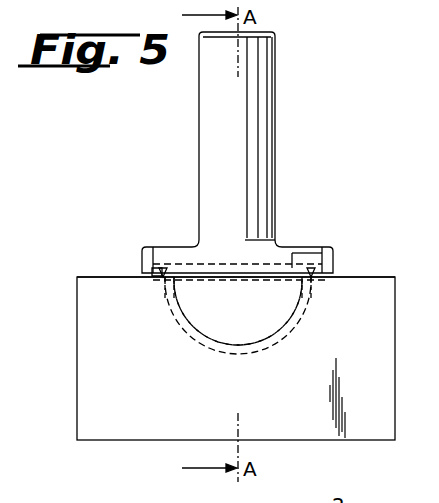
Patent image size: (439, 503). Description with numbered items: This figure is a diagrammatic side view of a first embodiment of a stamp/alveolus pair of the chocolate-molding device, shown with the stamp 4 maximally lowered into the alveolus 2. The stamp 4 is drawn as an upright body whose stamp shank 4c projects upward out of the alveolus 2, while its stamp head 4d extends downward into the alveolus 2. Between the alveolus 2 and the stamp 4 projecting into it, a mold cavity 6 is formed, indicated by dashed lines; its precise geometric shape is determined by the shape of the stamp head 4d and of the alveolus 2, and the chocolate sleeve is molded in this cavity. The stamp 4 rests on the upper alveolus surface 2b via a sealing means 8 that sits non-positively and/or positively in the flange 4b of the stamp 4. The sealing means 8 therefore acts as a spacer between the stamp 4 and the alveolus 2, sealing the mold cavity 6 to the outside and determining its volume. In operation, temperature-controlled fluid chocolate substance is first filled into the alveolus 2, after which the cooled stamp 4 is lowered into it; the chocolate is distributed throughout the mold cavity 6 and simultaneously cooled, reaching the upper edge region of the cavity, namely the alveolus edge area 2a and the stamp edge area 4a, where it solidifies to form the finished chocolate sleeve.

The alveolus 2 is at (101, 390).
The alveolus edge area 2a is at (178, 318).
The upper alveolus surface 2b is at (361, 277).
The stamp 4 is at (226, 186).
The stamp edge area 4a is at (163, 284).
The flange 4b is at (305, 247).
The stamp shank 4c is at (218, 160).
The stamp head 4d is at (290, 300).
The mold cavity 6 is at (262, 352).
The sealing means 8 is at (156, 248).